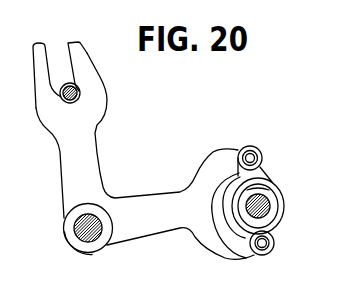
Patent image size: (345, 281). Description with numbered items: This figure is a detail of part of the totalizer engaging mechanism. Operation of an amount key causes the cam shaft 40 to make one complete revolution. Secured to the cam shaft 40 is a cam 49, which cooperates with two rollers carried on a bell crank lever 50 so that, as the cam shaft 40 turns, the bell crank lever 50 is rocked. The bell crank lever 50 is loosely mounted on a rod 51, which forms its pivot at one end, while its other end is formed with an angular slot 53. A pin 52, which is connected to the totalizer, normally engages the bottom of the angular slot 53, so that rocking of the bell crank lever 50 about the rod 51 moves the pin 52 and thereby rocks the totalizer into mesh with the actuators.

The cam shaft 40 is at (268, 206).
The cam 49 is at (233, 178).
The bell crank lever 50 is at (198, 229).
The rod 51 is at (78, 230).
The pin 52 is at (80, 92).
The angular slot 53 is at (67, 43).